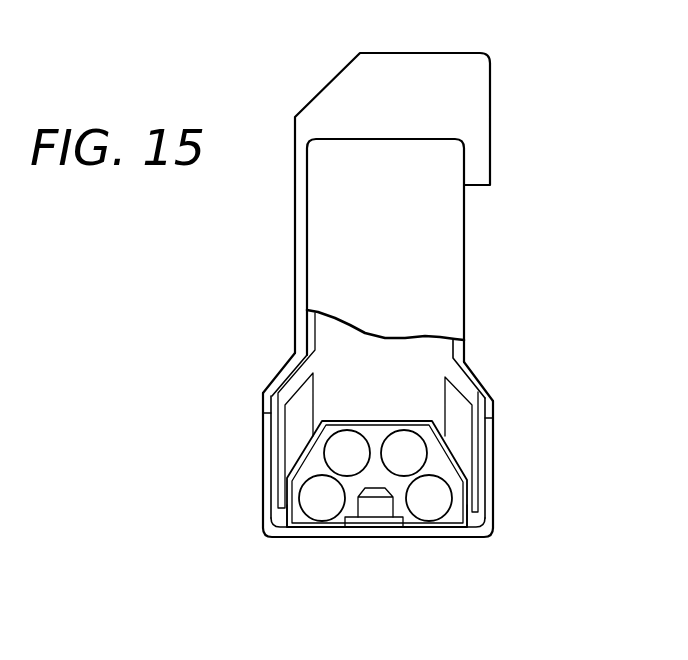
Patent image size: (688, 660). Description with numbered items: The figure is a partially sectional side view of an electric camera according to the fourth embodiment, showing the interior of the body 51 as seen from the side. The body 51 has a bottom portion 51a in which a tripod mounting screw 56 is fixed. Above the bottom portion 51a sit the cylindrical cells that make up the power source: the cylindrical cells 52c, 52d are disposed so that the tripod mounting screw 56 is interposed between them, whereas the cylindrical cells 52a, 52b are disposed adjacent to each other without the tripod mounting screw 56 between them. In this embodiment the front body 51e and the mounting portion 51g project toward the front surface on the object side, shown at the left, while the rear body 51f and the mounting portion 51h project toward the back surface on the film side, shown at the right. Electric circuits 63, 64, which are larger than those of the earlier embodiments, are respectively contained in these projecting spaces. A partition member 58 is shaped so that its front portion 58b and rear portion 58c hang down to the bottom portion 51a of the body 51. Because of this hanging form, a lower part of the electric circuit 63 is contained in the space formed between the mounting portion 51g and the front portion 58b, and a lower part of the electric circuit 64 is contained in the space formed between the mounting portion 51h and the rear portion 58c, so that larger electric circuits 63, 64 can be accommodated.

The body 51 is at (447, 224).
The bottom portion 51a is at (441, 540).
The front body 51e is at (287, 375).
The rear body 51f is at (464, 351).
The mounting portion 51g is at (266, 437).
The mounting portion 51h is at (494, 446).
The cylindrical cell 52a is at (408, 454).
The cylindrical cell 52b is at (337, 461).
The cylindrical cell 52c is at (307, 498).
The cylindrical cell 52d is at (433, 503).
The tripod mounting screw 56 is at (372, 508).
The partition member 58 is at (376, 421).
The front portion 58b is at (262, 519).
The rear portion 58c is at (487, 528).
The electric circuit 63 is at (293, 405).
The electric circuit 64 is at (456, 411).